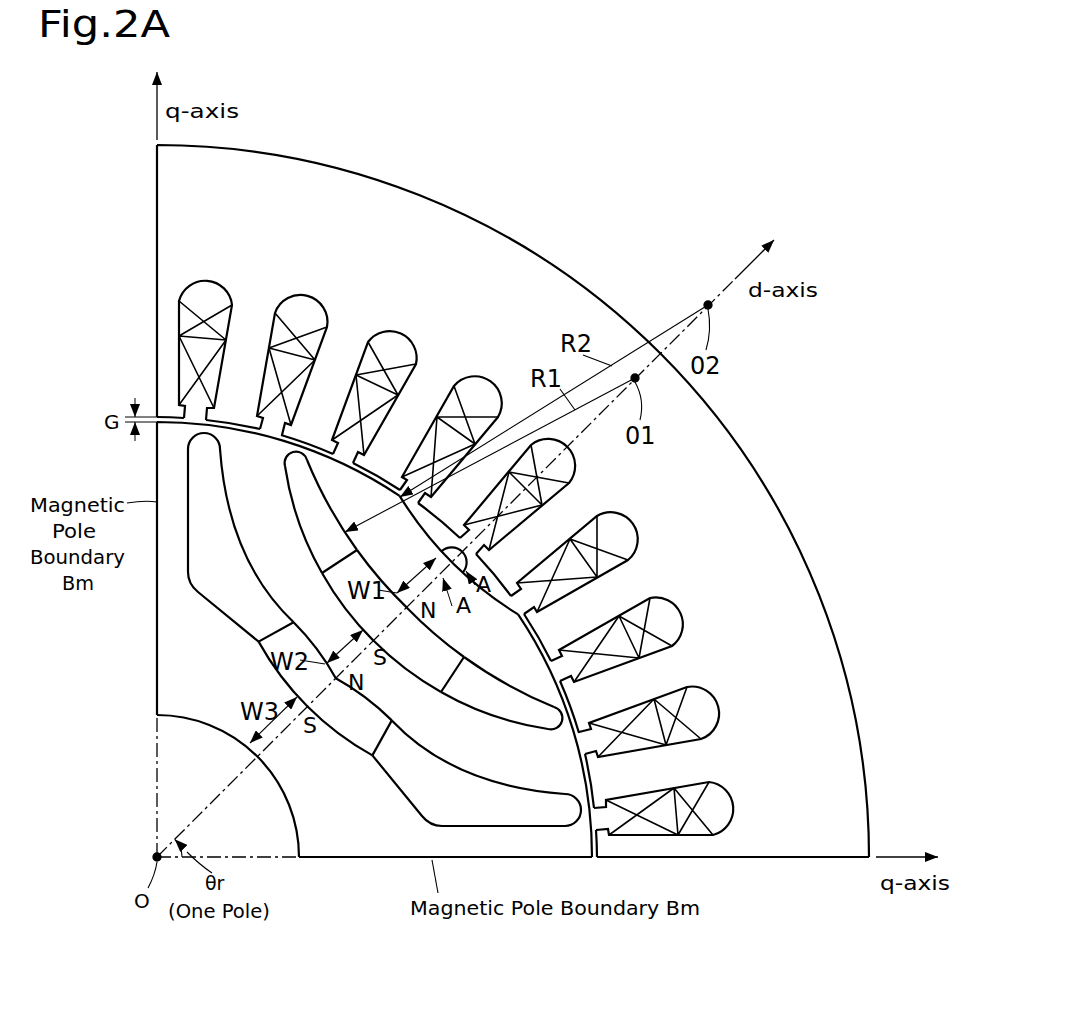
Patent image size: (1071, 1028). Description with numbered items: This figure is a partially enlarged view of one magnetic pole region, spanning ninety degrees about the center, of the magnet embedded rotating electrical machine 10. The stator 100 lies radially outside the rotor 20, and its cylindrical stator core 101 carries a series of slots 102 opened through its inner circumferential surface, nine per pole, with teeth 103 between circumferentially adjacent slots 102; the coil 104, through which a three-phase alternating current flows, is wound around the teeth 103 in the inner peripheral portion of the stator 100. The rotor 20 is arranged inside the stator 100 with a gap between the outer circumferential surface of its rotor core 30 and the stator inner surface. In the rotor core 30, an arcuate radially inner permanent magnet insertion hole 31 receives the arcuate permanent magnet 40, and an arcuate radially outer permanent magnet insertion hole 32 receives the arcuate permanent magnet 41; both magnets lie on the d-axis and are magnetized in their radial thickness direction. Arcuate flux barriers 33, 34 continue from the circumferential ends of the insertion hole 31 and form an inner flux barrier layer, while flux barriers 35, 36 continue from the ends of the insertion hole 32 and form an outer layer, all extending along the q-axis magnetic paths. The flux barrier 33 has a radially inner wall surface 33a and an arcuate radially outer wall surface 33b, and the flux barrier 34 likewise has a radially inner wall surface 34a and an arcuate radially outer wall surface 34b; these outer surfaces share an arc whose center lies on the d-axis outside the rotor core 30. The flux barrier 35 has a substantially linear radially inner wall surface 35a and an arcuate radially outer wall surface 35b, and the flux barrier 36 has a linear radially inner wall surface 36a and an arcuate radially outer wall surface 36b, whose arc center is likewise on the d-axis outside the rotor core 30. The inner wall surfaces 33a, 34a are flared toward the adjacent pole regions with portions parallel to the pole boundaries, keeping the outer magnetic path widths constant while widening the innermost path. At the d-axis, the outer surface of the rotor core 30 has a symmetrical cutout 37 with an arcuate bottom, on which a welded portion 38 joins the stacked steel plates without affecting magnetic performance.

The rotating electrical machine 10 is at (836, 428).
The rotor 20 is at (281, 795).
The rotor core 30 is at (206, 713).
The permanent magnet insertion hole 31 is at (347, 730).
The permanent magnet insertion hole 32 is at (433, 681).
The flux barrier 33 is at (258, 643).
The radially inner wall surface 33a is at (188, 562).
The radially outer wall surface 33b is at (236, 520).
The flux barrier 34 is at (397, 789).
The radially inner wall surface 34a is at (481, 827).
The radially outer wall surface 34b is at (509, 787).
The flux barrier 35 is at (330, 556).
The radially inner wall surface 35a is at (289, 500).
The radially outer wall surface 35b is at (329, 503).
The flux barrier 36 is at (484, 699).
The radially inner wall surface 36a is at (497, 722).
The radially outer wall surface 36b is at (467, 660).
The cutout 37 is at (490, 604).
The welded portion 38 is at (440, 554).
The permanent magnet 40 is at (266, 661).
The permanent magnet 41 is at (360, 613).
The stator 100 is at (827, 612).
The stator core 101 is at (791, 528).
The slot 102 is at (395, 345).
The tooth 103 is at (347, 357).
The coil 104 is at (432, 430).